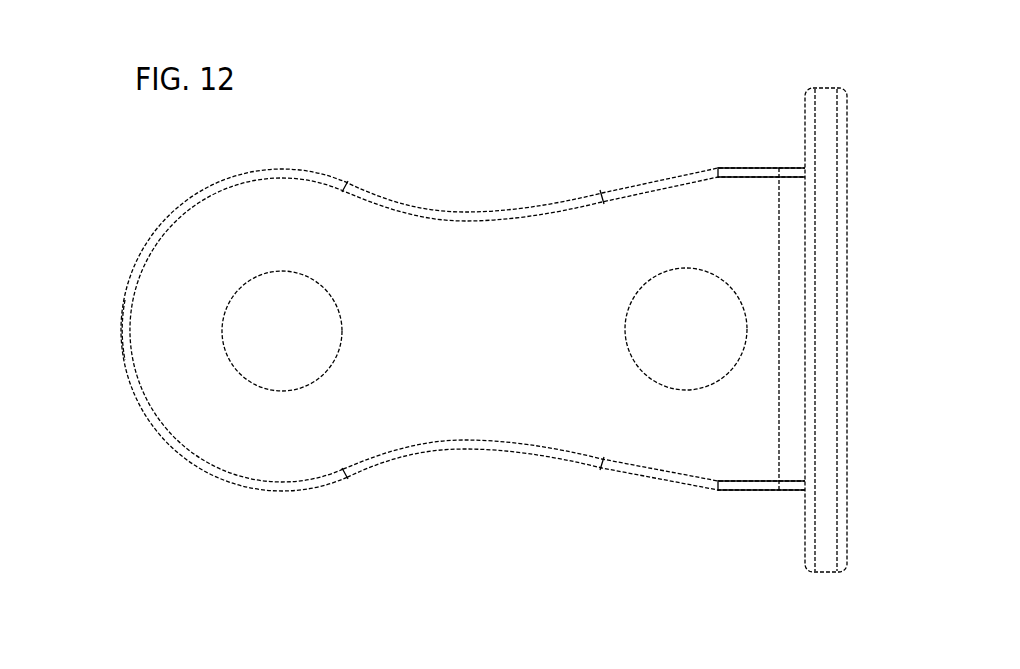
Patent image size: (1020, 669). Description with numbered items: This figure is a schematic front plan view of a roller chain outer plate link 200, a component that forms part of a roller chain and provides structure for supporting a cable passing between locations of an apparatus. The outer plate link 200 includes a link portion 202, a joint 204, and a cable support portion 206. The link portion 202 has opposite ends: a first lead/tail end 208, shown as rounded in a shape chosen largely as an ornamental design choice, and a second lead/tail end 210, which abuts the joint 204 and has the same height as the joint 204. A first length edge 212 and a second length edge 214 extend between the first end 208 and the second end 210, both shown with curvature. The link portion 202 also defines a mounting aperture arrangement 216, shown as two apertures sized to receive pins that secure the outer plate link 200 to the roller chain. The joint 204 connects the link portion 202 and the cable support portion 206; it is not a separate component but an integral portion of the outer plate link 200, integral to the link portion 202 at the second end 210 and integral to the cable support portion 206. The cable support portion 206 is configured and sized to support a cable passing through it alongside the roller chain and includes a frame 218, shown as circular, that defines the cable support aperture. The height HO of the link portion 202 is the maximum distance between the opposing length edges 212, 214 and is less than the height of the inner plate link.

The outer plate link 200 is at (839, 64).
The link portion 202 is at (396, 435).
The joint 204 is at (800, 168).
The cable support portion 206 is at (849, 117).
The first lead/tail end 208 is at (120, 338).
The second lead/tail end 210 is at (772, 453).
The first length edge 212 is at (457, 212).
The second length edge 214 is at (478, 447).
The mounting aperture arrangement 216 is at (625, 323).
The frame 218 is at (825, 365).
The height of link portion HO is at (779, 243).